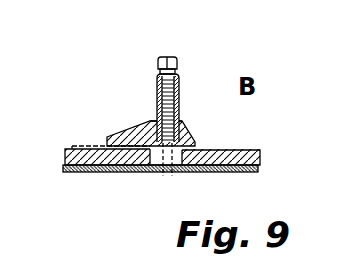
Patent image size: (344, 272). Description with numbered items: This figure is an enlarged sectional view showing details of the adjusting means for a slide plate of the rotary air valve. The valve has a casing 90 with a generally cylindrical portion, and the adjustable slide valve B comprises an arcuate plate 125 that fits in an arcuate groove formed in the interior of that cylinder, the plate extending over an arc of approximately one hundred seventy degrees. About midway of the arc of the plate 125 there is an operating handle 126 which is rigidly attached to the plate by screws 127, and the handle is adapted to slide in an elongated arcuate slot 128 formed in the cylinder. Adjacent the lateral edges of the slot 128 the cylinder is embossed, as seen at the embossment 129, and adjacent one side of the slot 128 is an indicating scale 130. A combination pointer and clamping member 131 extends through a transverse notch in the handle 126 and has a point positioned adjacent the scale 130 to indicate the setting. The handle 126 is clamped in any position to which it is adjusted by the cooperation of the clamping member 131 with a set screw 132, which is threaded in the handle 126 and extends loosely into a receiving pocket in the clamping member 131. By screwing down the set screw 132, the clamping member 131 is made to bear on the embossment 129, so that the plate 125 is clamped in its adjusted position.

The casing 90 is at (242, 155).
The arcuate plate 125 is at (218, 172).
The operating handle 126 is at (181, 90).
The screws 127 is at (168, 177).
The elongated arcuate slot 128 is at (147, 170).
The embossment 129 is at (147, 135).
The indicating scale 130 is at (95, 146).
The combination pointer and clamping member 131 is at (155, 120).
The set screw 132 is at (175, 57).